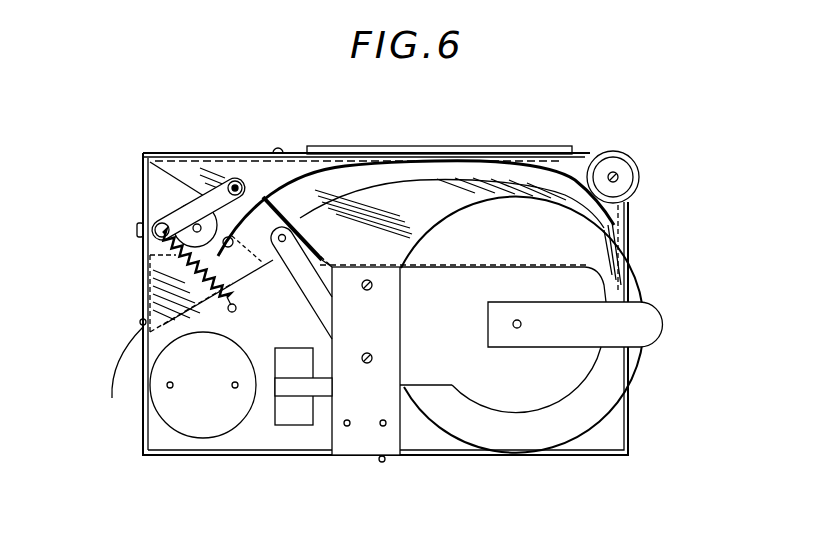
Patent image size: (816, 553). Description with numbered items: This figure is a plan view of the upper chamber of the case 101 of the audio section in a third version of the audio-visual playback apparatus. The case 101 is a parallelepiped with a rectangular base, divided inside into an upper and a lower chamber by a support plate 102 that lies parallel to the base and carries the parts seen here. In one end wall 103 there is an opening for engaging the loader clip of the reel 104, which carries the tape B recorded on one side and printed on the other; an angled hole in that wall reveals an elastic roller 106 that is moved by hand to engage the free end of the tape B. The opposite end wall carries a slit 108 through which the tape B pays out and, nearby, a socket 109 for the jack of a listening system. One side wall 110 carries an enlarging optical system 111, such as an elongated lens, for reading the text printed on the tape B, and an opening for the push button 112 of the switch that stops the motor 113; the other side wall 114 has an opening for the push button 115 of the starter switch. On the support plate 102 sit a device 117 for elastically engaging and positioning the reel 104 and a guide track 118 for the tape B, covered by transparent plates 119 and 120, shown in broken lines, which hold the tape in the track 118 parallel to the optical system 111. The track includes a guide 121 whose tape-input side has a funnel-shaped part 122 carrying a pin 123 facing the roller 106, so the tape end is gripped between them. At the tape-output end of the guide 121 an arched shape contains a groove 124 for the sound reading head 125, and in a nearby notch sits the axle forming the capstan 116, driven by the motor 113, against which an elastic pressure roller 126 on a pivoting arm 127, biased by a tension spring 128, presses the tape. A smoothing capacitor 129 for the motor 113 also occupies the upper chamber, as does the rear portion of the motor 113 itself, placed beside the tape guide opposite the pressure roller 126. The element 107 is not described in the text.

The case 101 is at (163, 150).
The support plate 102 is at (253, 435).
The end wall 103 is at (632, 203).
The reel 104 is at (622, 292).
The elastic roller 106 is at (618, 167).
The side wall 107 is at (148, 262).
The slit 108 is at (140, 320).
The socket 109 is at (137, 229).
The side wall 110 is at (195, 151).
The enlarging optical system 111 is at (420, 155).
The push button 112 is at (279, 148).
The motor 113 is at (195, 426).
The side wall 114 is at (277, 457).
The push button 115 is at (379, 463).
The capstan 116 is at (253, 232).
The device for elastic engagement and positioning of reel 117 is at (503, 395).
The guide track 118 is at (433, 165).
The transparent plate 119 is at (319, 245).
The transparent plate 120 is at (160, 277).
The guide 121 is at (383, 177).
The funnel-shaped part 122 is at (567, 178).
The pin 123 is at (280, 192).
The groove 124 is at (281, 209).
The sound reading head 125 is at (301, 283).
The elastic pressure roller 126 is at (190, 216).
The pivoting arm 127 is at (218, 200).
The tension spring 128 is at (199, 280).
The smoothing capacitor 129 is at (291, 415).
The tape B is at (120, 367).